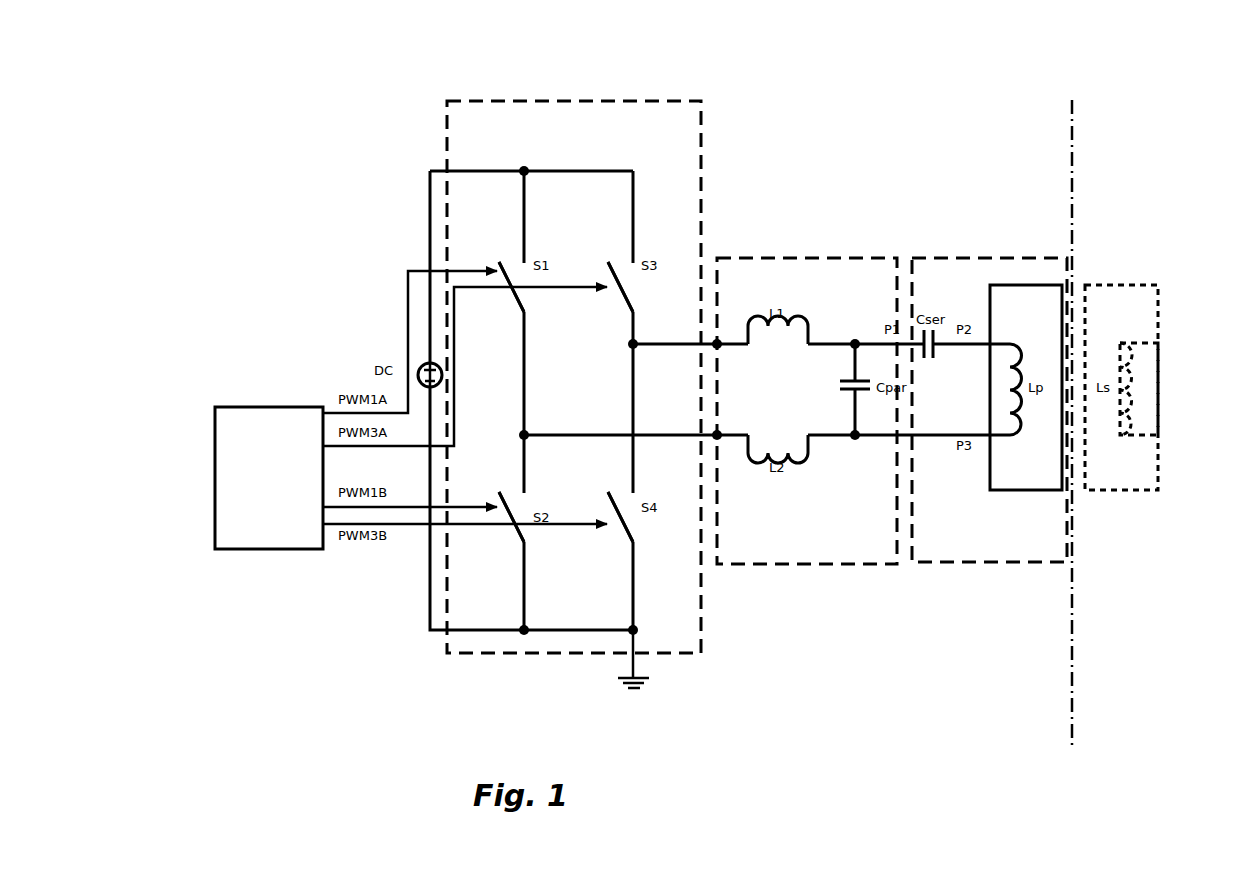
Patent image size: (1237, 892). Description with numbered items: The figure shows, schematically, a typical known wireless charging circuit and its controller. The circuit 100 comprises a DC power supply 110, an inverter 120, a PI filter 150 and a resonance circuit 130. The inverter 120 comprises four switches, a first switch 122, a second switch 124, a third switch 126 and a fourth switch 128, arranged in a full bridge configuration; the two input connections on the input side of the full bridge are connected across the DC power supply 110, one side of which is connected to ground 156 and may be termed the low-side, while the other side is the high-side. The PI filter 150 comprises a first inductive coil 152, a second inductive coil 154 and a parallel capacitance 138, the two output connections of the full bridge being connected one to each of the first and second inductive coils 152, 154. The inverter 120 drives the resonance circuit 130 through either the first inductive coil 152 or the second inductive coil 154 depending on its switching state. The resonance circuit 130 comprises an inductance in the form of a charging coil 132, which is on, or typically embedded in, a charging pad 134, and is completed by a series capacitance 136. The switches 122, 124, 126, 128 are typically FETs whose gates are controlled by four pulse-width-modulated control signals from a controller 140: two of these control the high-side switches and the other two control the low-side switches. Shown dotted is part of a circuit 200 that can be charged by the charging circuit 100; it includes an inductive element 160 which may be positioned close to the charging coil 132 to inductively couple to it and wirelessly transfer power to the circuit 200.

The circuit 100 is at (368, 135).
The DC power supply 110 is at (422, 366).
The inverter 120 is at (688, 96).
The switch S1 122 is at (512, 268).
The switch S2 124 is at (505, 532).
The switch S3 126 is at (604, 276).
The switch S4 128 is at (612, 533).
The resonance circuit 130 is at (1003, 258).
The charging coil Lp 132 is at (1024, 456).
The charging pad 134 is at (1046, 484).
The series capacitance Cser 136 is at (945, 336).
The capacitance Cpar 138 is at (863, 410).
The controller 140 is at (228, 421).
The PI filter 150 is at (808, 258).
The inductive coil L1 152 is at (752, 323).
The inductive coil L2 154 is at (753, 483).
The ground 156 is at (645, 686).
The inductive element 160 is at (1118, 343).
The circuit 200 is at (1181, 193).